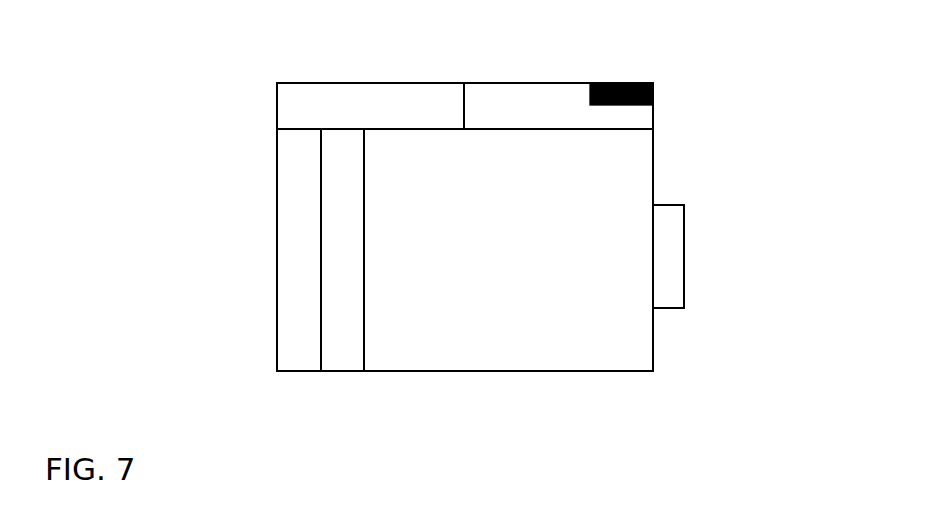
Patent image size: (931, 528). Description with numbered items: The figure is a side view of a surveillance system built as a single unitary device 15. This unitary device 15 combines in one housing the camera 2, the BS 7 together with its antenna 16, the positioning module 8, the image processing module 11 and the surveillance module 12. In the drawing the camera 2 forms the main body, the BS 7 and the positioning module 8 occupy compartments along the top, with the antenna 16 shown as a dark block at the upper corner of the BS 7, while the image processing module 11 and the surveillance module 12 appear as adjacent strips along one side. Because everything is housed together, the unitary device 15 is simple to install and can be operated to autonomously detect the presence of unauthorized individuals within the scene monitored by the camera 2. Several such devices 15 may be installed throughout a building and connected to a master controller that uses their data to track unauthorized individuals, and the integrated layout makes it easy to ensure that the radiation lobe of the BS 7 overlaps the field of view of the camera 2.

The camera 2 is at (502, 318).
The BS 7 is at (550, 105).
The positioning module 8 is at (328, 104).
The image processing module 11 is at (339, 340).
The surveillance module 12 is at (298, 250).
The unitary device 15 is at (442, 68).
The antenna 16 is at (653, 83).